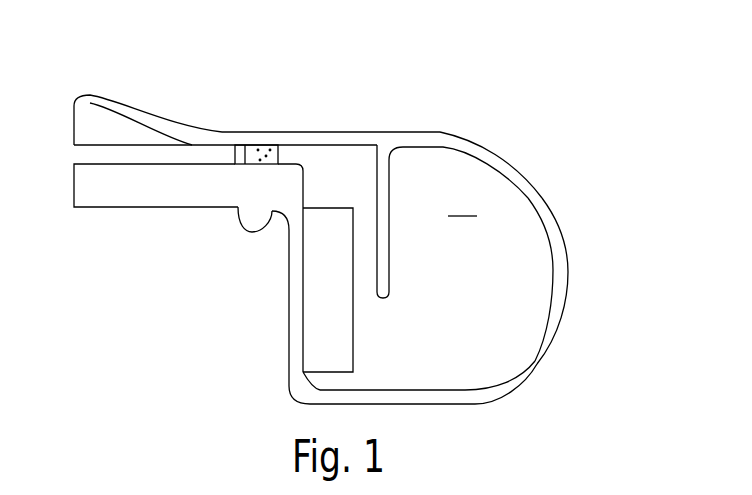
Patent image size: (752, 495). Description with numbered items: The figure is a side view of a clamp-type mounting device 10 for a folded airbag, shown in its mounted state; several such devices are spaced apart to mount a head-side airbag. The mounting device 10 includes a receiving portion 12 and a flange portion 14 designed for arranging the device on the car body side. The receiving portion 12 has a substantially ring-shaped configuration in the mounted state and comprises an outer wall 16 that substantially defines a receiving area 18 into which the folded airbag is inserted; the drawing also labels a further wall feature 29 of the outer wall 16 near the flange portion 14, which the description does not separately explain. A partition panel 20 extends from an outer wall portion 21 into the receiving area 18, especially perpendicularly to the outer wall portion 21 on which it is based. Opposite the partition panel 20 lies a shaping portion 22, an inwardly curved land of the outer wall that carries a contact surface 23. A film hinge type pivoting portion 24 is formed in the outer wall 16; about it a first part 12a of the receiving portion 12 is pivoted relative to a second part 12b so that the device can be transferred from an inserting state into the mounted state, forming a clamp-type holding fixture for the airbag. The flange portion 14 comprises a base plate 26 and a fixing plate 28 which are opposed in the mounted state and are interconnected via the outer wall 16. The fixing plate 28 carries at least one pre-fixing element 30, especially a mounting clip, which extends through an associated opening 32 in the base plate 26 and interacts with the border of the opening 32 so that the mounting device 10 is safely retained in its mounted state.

The mounting device 10 is at (513, 93).
The receiving portion 12 is at (568, 195).
The first part of the receiving portion 12a is at (523, 173).
The second part of the receiving portion 12b is at (497, 397).
The flange portion 14 is at (160, 97).
The outer wall 16 is at (440, 132).
The receiving area 18 is at (462, 204).
The partition panel 20 is at (397, 238).
The outer wall portion 21 is at (387, 128).
The shaping portion 22 is at (338, 349).
The contact surface 23 is at (366, 313).
The pivoting portion 24 is at (540, 360).
The base plate 26 is at (127, 203).
The fixing plate 28 is at (263, 132).
The top surface 29 is at (317, 132).
The pre-fixing element 30 is at (245, 228).
The opening 32 is at (217, 223).